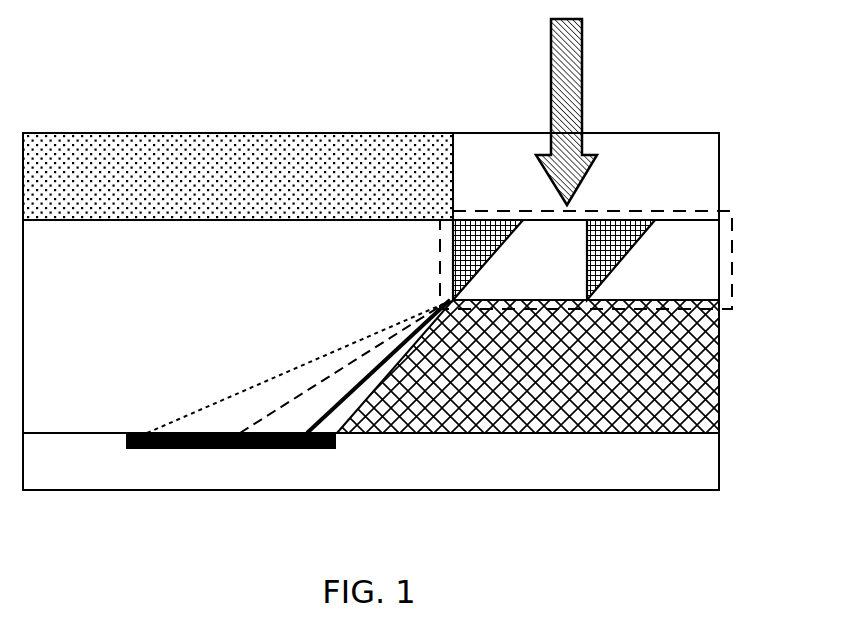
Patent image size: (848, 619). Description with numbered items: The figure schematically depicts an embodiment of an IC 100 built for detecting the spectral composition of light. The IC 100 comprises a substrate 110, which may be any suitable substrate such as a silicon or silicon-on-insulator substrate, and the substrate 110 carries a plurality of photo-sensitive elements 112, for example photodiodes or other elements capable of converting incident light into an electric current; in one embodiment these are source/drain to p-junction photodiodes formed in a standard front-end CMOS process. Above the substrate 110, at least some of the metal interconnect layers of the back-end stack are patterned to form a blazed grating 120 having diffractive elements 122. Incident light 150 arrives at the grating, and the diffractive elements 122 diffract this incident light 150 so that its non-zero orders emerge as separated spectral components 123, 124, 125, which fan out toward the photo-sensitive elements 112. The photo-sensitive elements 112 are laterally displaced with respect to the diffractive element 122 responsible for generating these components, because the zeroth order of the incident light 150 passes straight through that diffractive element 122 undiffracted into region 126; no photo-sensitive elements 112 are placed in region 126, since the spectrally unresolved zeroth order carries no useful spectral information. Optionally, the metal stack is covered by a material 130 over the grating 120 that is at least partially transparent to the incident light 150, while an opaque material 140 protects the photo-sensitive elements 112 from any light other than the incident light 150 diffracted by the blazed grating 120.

The IC 100 is at (347, 536).
The substrate 110 is at (567, 465).
The photo-sensitive elements 112 is at (336, 441).
The blazed grating 120 is at (735, 220).
The diffractive elements 122 is at (536, 271).
The spectral component 123 is at (332, 407).
The spectral component 124 is at (357, 360).
The spectral component 125 is at (207, 405).
The region 126 is at (705, 395).
The material 130 is at (656, 160).
The opaque material 140 is at (323, 150).
The incident light 150 is at (552, 65).